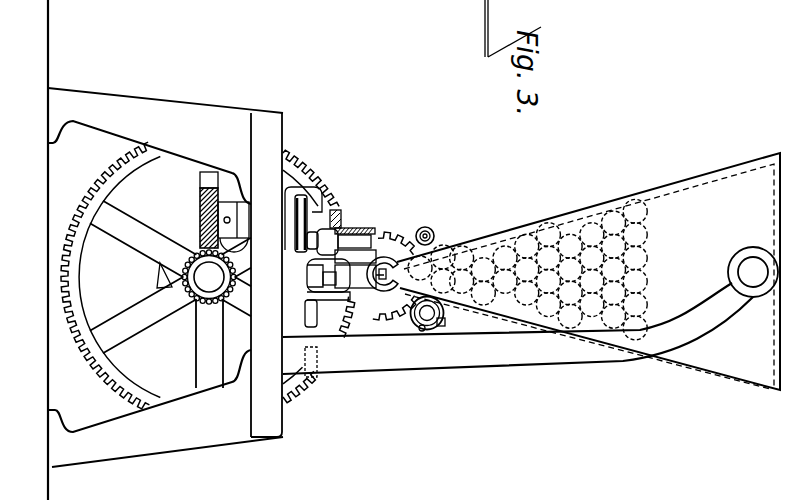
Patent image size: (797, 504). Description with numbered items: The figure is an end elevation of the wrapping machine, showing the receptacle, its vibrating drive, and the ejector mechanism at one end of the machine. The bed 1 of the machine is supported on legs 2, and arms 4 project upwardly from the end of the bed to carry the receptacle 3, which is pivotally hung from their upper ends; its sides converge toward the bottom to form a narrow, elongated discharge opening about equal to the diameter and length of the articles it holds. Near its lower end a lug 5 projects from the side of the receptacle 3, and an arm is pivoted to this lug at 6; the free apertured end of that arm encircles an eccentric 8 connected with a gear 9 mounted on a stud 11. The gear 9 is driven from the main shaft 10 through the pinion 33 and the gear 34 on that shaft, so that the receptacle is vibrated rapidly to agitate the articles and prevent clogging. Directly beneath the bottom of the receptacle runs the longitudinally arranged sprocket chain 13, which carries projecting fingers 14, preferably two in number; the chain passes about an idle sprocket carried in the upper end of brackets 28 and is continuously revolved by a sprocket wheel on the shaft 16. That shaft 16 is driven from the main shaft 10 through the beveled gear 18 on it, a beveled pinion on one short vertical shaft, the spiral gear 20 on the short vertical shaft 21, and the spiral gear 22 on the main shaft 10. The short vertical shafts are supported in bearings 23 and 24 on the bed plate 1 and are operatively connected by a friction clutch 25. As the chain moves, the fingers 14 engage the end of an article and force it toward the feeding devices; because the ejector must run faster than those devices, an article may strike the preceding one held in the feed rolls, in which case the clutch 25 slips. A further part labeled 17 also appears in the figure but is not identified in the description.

The bed 1 is at (281, 419).
The legs 2 is at (112, 108).
The receptacle 3 is at (712, 363).
The arms 4 is at (578, 355).
The lug 5 is at (415, 238).
The pivot 6 is at (425, 227).
The eccentric 8 is at (426, 330).
The gear 9 is at (413, 327).
The main shaft 10 is at (190, 305).
The stud 11 is at (444, 323).
The sprocket chain 13 is at (363, 310).
The fingers 14 is at (337, 300).
The shaft 16 is at (358, 228).
The screw 17 is at (334, 227).
The beveled gear 18 is at (363, 228).
The spiral gear 20 is at (200, 205).
The short vertical shaft 21 is at (200, 232).
The spiral gear 22 is at (205, 290).
The bearing 23 is at (307, 236).
The bearing 24 is at (323, 280).
The friction clutch 25 is at (290, 205).
The brackets 28 is at (320, 310).
The pinion 33 is at (382, 305).
The gear 34 is at (108, 177).